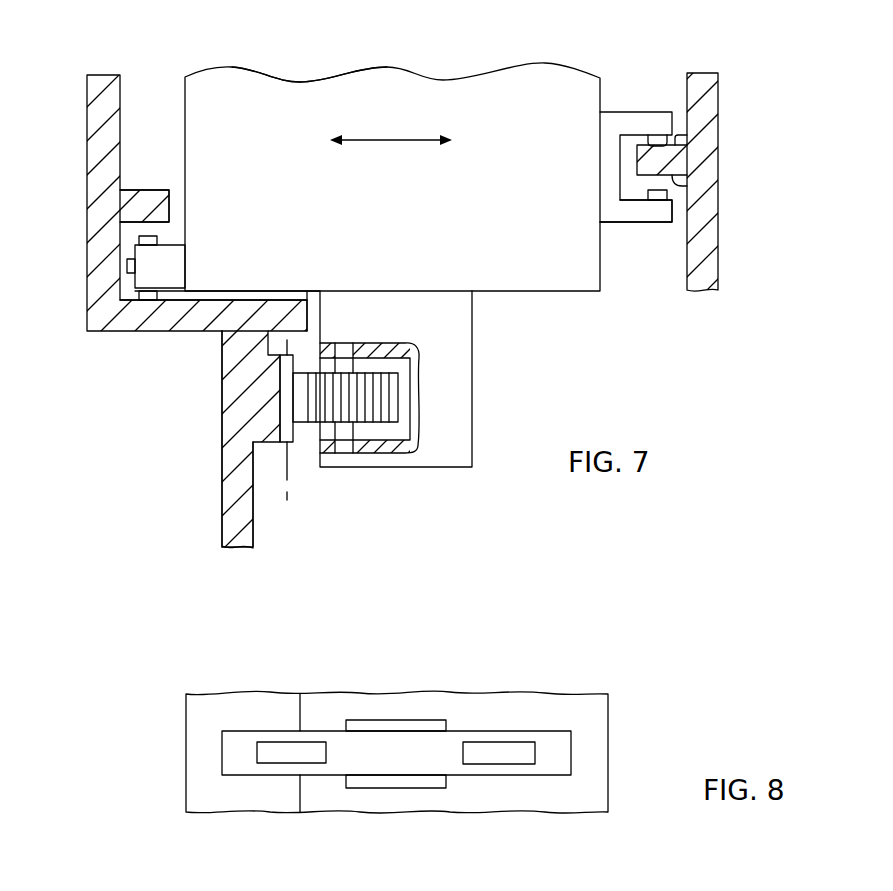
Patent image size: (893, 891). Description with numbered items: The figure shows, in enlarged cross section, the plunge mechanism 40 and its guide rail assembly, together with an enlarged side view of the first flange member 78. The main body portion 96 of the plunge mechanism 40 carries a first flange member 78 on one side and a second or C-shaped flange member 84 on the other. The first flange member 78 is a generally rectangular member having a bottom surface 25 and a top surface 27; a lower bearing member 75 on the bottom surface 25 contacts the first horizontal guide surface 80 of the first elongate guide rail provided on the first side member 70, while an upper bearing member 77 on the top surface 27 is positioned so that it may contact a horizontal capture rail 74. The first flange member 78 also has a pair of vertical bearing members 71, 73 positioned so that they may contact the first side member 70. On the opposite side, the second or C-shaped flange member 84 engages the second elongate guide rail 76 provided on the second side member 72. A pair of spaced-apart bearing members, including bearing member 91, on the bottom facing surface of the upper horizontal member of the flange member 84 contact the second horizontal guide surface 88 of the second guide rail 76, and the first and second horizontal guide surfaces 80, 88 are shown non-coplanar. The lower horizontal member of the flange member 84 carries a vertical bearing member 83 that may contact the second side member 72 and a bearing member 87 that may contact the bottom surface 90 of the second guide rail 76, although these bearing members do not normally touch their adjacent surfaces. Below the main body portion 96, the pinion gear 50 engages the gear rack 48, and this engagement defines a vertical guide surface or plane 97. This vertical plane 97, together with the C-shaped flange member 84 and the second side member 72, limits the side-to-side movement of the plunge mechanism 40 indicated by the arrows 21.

In FIG. 7, the arrows 21 is at (392, 141).
In FIG. 8, the bottom surface 25 is at (301, 776).
In FIG. 8, the top surface 27 is at (300, 728).
In FIG. 7, the plunge mechanism 40 is at (355, 64).
In FIG. 7, the gear rack 48 is at (257, 447).
In FIG. 7, the pinion gear 50 is at (398, 399).
In FIG. 7, the first side member 70 is at (87, 118).
In FIG. 8, the vertical bearing member 71 is at (263, 763).
In FIG. 7, the second side member 72 is at (703, 73).
In FIG. 7, the vertical bearing member 73 is at (123, 267).
In FIG. 8, the vertical bearing member 73 is at (536, 753).
In FIG. 7, the horizontal capture rail 74 is at (174, 197).
In FIG. 7, the lower bearing member 75 is at (137, 297).
In FIG. 8, the lower bearing member 75 is at (398, 788).
In FIG. 7, the second elongate guide rail 76 is at (632, 162).
In FIG. 7, the upper bearing member 77 is at (145, 236).
In FIG. 8, the upper bearing member 77 is at (398, 720).
In FIG. 7, the first flange member 78 is at (126, 287).
In FIG. 8, the first flange member 78 is at (216, 752).
In FIG. 7, the first horizontal guide surface 80 is at (240, 298).
In FIG. 7, the vertical bearing member 83 is at (667, 222).
In FIG. 7, the second or C-shaped flange member 84 is at (620, 108).
In FIG. 7, the bearing member 87 is at (668, 196).
In FIG. 7, the second horizontal guide surface 88 is at (680, 135).
In FIG. 7, the bottom surface 90 is at (675, 184).
In FIG. 7, the bearing member 91 is at (643, 130).
In FIG. 7, the main body portion 96 is at (531, 64).
In FIG. 8, the main body portion 96 is at (608, 727).
In FIG. 7, the vertical guide surface or plane 97 is at (287, 497).